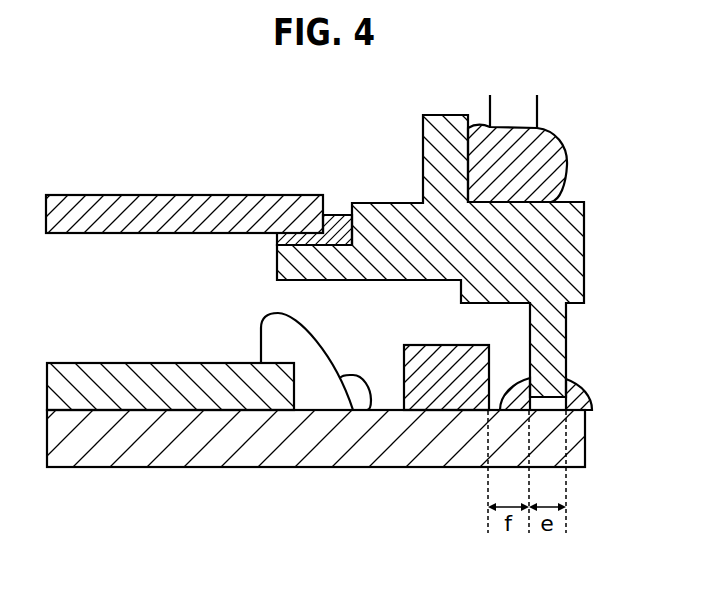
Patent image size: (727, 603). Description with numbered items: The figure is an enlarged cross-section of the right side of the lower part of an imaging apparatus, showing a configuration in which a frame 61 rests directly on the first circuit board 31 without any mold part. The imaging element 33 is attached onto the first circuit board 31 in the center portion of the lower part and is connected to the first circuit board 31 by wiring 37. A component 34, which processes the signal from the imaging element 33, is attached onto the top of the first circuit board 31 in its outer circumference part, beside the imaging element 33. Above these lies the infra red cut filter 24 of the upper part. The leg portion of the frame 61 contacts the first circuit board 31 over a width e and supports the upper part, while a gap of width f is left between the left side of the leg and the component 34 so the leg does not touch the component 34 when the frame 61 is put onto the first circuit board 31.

The infra red cut filter 24 is at (139, 215).
The frame 61 is at (560, 256).
The imaging element 33 is at (146, 380).
The first circuit board 31 is at (288, 447).
The wiring 37 is at (368, 411).
The component 34 is at (453, 405).